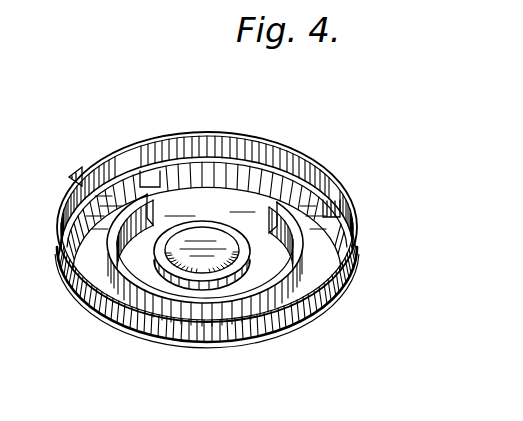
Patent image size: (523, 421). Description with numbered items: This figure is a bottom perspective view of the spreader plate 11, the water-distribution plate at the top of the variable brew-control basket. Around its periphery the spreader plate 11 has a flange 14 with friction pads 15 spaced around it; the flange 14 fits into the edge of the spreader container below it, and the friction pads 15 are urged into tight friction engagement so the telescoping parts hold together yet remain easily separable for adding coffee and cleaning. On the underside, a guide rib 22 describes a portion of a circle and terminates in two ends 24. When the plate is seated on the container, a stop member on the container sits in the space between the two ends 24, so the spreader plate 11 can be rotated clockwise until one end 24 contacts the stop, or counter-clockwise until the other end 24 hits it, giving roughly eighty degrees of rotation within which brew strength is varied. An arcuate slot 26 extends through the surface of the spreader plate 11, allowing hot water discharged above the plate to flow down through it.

The spreader plate 11 is at (228, 136).
The flange 14 is at (105, 188).
The friction pads 15 is at (146, 178).
The guide rib 22 is at (281, 289).
The ends 24 is at (263, 210).
The arcuate slot 26 is at (200, 283).